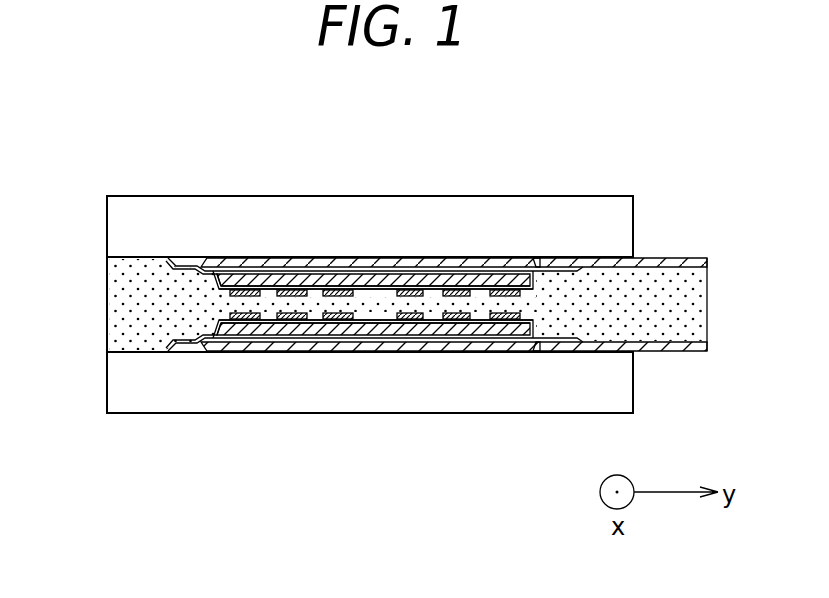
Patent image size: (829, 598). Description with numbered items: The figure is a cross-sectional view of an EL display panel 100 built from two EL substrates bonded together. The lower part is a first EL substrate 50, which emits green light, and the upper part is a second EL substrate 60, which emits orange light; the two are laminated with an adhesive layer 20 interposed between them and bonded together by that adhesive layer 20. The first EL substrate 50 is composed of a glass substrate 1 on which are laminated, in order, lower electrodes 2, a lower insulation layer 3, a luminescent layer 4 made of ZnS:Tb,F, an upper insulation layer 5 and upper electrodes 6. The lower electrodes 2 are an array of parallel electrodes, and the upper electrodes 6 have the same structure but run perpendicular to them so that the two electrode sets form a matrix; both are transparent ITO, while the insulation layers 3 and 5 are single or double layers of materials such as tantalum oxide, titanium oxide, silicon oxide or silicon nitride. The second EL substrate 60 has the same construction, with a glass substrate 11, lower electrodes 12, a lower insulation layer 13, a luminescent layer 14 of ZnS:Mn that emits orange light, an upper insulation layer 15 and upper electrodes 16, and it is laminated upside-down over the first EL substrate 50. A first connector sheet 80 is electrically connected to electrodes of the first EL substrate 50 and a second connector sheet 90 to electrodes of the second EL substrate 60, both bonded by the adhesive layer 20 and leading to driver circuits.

The EL display panel 100 is at (265, 158).
The adhesive layer 20 is at (145, 303).
The second EL substrate 60 is at (553, 113).
The first EL substrate 50 is at (553, 492).
The glass substrate 11 is at (402, 222).
The lower electrodes 12 is at (423, 269).
The lower insulation layer 13 is at (458, 280).
The luminescent layer 14 is at (490, 288).
The upper insulation layer 15 is at (507, 294).
The upper electrodes 16 is at (518, 291).
The glass substrate 1 is at (402, 388).
The lower electrodes 2 is at (423, 340).
The lower insulation layer 3 is at (458, 329).
The luminescent layer 4 is at (490, 321).
The upper insulation layer 5 is at (507, 315).
The upper electrodes 6 is at (518, 318).
The second connector sheet 90 is at (675, 262).
The first connector sheet 80 is at (675, 347).